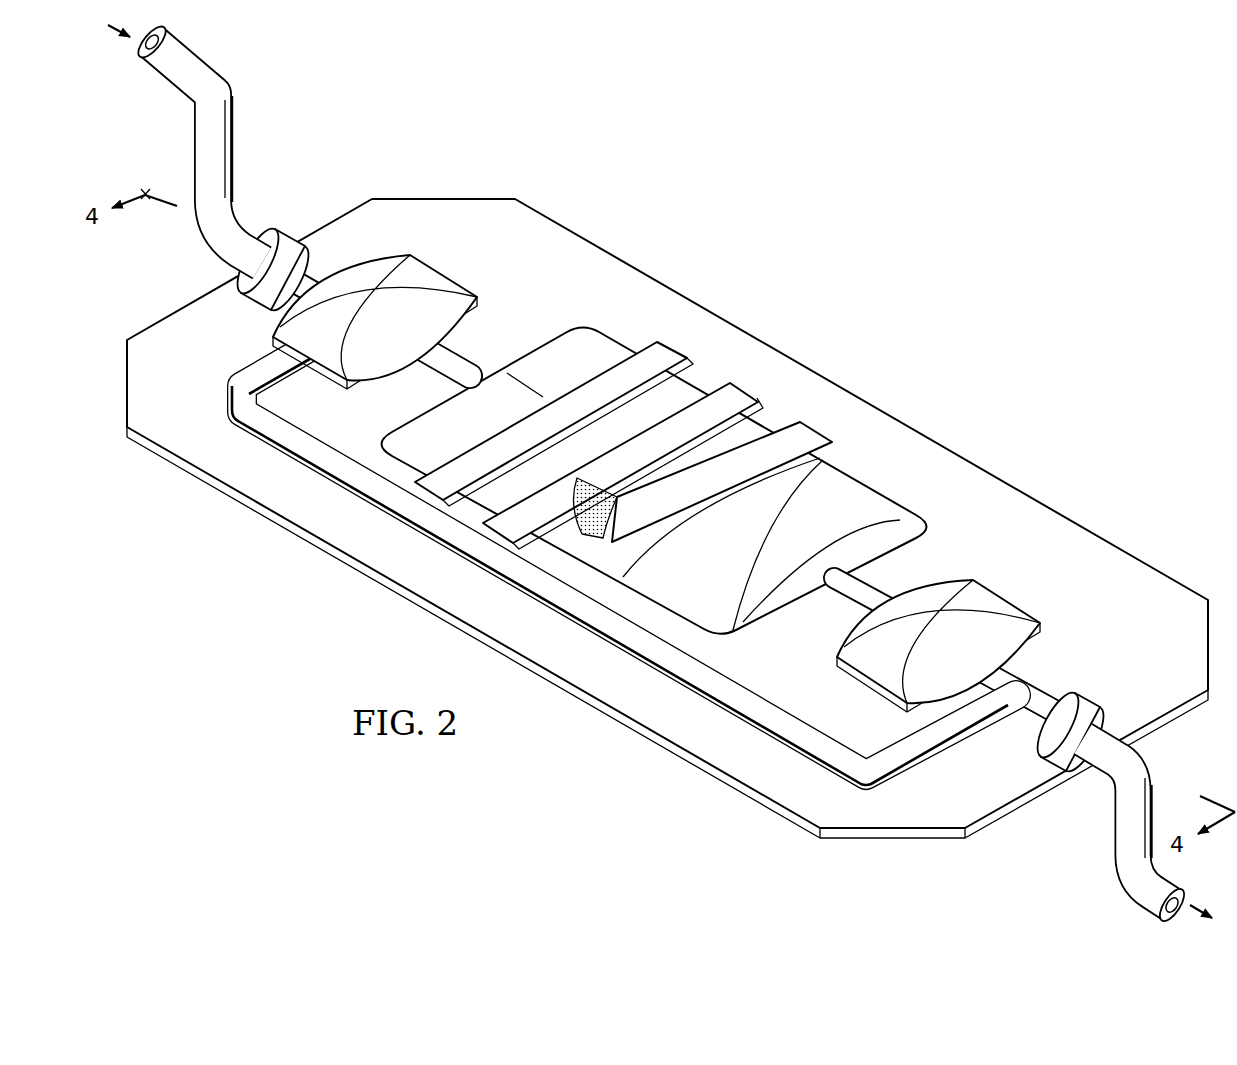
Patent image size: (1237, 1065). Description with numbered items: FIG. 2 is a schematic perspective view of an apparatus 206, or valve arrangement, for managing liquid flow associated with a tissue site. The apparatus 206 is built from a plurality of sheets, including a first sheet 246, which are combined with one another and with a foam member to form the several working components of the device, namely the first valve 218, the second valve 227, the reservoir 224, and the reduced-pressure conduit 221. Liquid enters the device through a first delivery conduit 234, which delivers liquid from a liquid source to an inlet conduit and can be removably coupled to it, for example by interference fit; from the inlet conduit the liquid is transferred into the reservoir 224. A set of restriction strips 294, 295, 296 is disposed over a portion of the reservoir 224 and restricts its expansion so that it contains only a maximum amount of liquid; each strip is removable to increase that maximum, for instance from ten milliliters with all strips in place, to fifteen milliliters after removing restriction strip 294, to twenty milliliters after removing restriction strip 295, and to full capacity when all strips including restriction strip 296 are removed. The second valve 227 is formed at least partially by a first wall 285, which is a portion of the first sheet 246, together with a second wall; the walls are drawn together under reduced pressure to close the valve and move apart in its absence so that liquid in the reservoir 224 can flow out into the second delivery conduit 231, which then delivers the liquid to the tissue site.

The apparatus 206 is at (667, 473).
The first sheet 246 is at (1133, 562).
The first valve 218 is at (420, 268).
The second valve 227 is at (988, 600).
The reservoir 224 is at (598, 340).
The restriction strip 296 is at (663, 353).
The restriction strip 295 is at (735, 393).
The restriction strip 294 is at (807, 433).
The first wall 285 is at (828, 597).
The reduced-pressure conduit 221 is at (766, 694).
The first delivery conduit 234 is at (233, 136).
The second delivery conduit 231 is at (1098, 853).